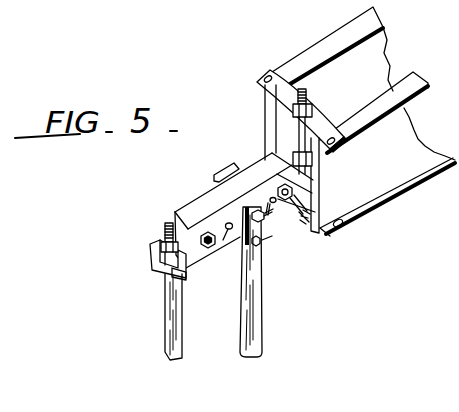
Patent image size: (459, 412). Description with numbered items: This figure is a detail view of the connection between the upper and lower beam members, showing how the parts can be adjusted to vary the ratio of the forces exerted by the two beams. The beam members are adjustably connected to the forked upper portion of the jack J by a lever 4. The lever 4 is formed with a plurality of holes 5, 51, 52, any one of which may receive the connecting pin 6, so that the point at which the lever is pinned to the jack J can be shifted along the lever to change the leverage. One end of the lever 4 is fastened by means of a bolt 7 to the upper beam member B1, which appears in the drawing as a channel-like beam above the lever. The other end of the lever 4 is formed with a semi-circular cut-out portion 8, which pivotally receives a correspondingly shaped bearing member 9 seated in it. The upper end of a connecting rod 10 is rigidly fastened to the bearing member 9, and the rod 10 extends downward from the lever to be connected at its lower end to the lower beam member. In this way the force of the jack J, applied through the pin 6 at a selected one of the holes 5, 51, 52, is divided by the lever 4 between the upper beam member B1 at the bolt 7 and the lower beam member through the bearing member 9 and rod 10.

The upper beam member B1 is at (320, 50).
The bolt 7 is at (287, 128).
The lever 4 is at (200, 203).
The bearing member 9 is at (157, 241).
The hole 5 is at (209, 250).
The hole 51 is at (258, 246).
The hole 52 is at (288, 203).
The connecting pin 6 is at (270, 218).
The semi-circular cut-out portion 8 is at (181, 278).
The connecting rod 10 is at (182, 320).
The jack J is at (255, 316).